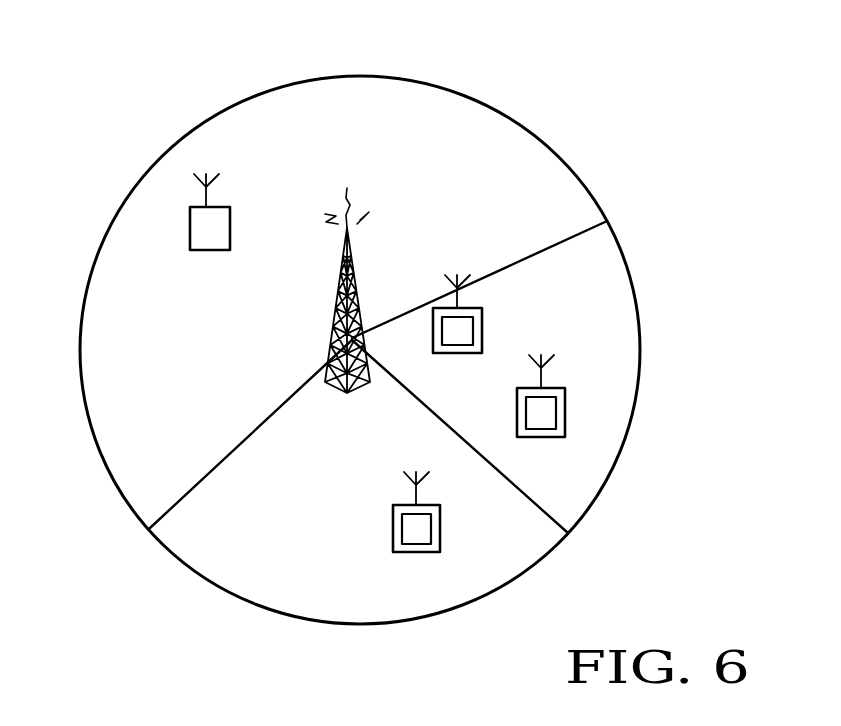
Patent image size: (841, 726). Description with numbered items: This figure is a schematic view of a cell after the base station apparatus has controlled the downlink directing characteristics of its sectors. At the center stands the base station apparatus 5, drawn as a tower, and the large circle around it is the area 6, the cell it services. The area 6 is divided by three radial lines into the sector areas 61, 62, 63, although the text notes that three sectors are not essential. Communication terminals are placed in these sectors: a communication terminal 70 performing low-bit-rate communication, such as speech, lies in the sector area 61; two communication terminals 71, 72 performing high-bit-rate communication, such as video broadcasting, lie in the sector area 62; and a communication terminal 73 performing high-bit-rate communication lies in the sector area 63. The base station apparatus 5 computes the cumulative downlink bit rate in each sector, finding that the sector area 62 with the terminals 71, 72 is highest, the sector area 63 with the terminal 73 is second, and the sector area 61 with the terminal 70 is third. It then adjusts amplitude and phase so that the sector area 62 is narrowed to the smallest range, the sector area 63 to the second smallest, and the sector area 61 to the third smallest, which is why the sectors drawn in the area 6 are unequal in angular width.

The area 6 is at (491, 122).
The base station apparatus 5 is at (331, 338).
The sector area 61 is at (97, 340).
The sector area 62 is at (618, 272).
The sector area 63 is at (220, 572).
The communication terminal 70 is at (231, 217).
The communication terminal 71 is at (482, 322).
The communication terminal 72 is at (565, 400).
The communication terminal 73 is at (393, 523).